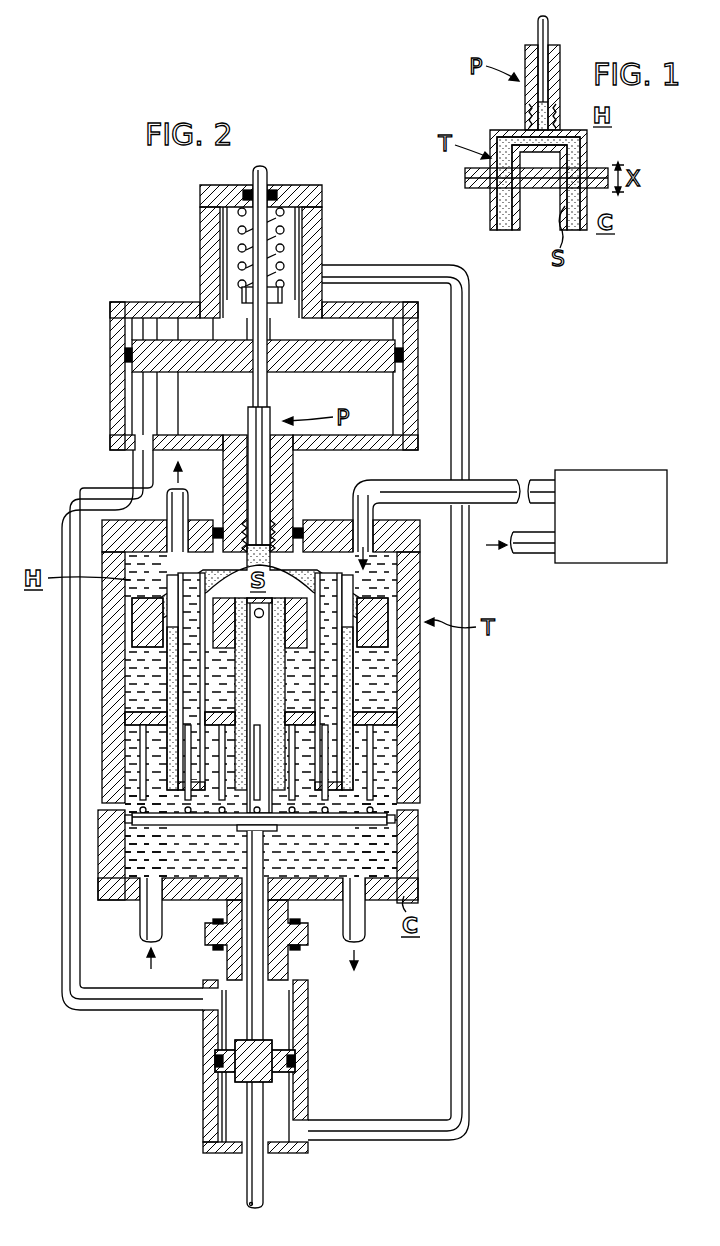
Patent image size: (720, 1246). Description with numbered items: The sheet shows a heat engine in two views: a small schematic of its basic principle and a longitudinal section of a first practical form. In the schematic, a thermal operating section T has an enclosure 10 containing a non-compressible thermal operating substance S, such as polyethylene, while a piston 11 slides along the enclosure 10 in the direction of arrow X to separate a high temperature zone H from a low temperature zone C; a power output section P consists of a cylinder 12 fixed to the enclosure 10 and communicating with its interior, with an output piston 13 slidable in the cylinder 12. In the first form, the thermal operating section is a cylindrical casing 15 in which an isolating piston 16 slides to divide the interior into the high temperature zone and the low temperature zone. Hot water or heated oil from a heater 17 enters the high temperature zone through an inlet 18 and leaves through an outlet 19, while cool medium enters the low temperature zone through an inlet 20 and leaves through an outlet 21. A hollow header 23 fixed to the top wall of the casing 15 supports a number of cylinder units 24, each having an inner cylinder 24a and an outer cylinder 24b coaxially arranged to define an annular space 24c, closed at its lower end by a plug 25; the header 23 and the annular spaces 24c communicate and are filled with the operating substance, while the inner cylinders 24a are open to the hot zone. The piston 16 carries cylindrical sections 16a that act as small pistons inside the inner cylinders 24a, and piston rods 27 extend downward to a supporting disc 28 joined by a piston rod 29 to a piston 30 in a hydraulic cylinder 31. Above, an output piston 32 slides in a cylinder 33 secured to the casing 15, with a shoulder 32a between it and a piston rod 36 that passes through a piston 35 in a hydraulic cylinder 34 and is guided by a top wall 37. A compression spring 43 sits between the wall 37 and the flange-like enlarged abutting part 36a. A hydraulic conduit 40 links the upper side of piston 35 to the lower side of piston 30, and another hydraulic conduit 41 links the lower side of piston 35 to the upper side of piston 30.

In FIG. 1, the enclosure 10 is at (497, 198).
In FIG. 1, the piston 11 is at (533, 190).
In FIG. 1, the cylinder 12 is at (530, 92).
In FIG. 1, the output piston 13 is at (551, 30).
In FIG. 2, the casing 15 is at (112, 680).
In FIG. 2, the isolating piston 16 is at (390, 712).
In FIG. 2, the cylindrical section 16a is at (266, 823).
In FIG. 2, the heater 17 is at (603, 563).
In FIG. 2, the inlet 18 is at (357, 532).
In FIG. 2, the outlet 19 is at (185, 527).
In FIG. 2, the inlet 20 is at (143, 932).
In FIG. 2, the outlet 21 is at (362, 932).
In FIG. 2, the hollow header 23 is at (135, 628).
In FIG. 2, the cylinder unit 24 is at (160, 690).
In FIG. 2, the inner cylinder 24a is at (350, 748).
In FIG. 2, the outer cylinder 24b is at (345, 668).
In FIG. 2, the annular space 24c is at (165, 765).
In FIG. 2, the plug 25 is at (348, 793).
In FIG. 2, the piston rod 27 is at (147, 792).
In FIG. 2, the supporting disc 28 is at (390, 826).
In FIG. 2, the piston rod 29 is at (256, 1015).
In FIG. 2, the piston 30 is at (290, 1075).
In FIG. 2, the hydraulic cylinder 31 is at (208, 1090).
In FIG. 2, the output piston 32 is at (251, 450).
In FIG. 2, the shoulder 32a is at (268, 410).
In FIG. 2, the cylinder 33 is at (287, 472).
In FIG. 2, the hydraulic cylinder 34 is at (112, 358).
In FIG. 2, the piston 35 is at (200, 367).
In FIG. 2, the piston rod 36 is at (305, 233).
In FIG. 2, the enlarged abutting part 36a is at (242, 295).
In FIG. 2, the top wall 37 is at (289, 195).
In FIG. 2, the hydraulic conduit 40 is at (470, 410).
In FIG. 2, the hydraulic conduit 41 is at (62, 905).
In FIG. 2, the compression spring 43 is at (237, 248).